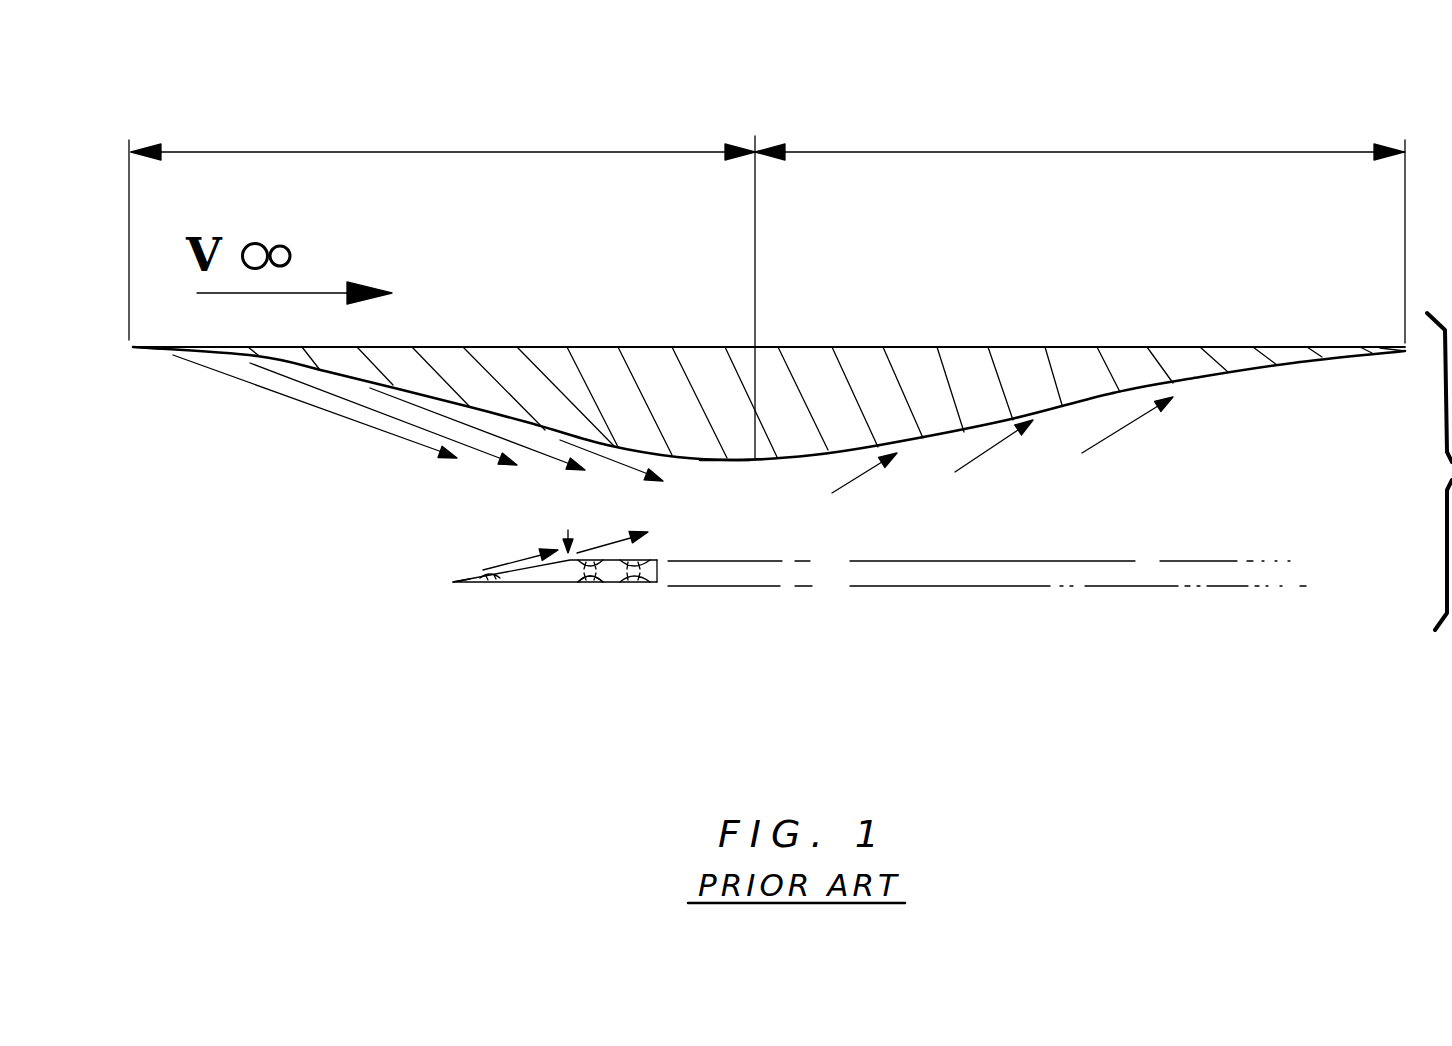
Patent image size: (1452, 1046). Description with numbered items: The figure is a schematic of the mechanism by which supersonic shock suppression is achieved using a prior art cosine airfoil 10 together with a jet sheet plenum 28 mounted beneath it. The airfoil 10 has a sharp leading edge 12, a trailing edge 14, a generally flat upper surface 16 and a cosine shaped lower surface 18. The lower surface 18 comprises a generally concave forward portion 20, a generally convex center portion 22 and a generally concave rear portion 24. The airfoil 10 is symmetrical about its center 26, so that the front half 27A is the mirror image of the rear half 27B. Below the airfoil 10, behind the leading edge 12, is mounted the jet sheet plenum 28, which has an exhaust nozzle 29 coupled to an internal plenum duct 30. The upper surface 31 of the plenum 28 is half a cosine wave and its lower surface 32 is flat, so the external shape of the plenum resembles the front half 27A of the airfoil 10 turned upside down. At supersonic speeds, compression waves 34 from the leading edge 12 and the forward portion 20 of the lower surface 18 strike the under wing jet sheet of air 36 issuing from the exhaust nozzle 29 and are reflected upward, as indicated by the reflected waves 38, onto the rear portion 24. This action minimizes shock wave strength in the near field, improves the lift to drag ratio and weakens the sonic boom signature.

The airfoil 10 is at (1063, 322).
The leading edge 12 is at (131, 350).
The trailing edge 14 is at (1403, 353).
The upper surface 16 is at (568, 346).
The lower surface 18 is at (727, 463).
The forward portion 20 is at (337, 373).
The center portion 22 is at (800, 460).
The rear portion 24 is at (1230, 371).
The center 26 is at (757, 264).
The front half 27A is at (423, 151).
The rear half 27B is at (1005, 151).
The jet sheet plenum 28 is at (603, 588).
The exhaust nozzle 29 is at (658, 570).
The internal plenum duct 30 is at (550, 570).
The upper surface of the plenum 31 is at (568, 532).
The lower surface of the plenum 32 is at (493, 584).
The compression waves 34 is at (488, 456).
The jet sheet of air 36 is at (754, 588).
The reflected compression waves 38 is at (990, 454).